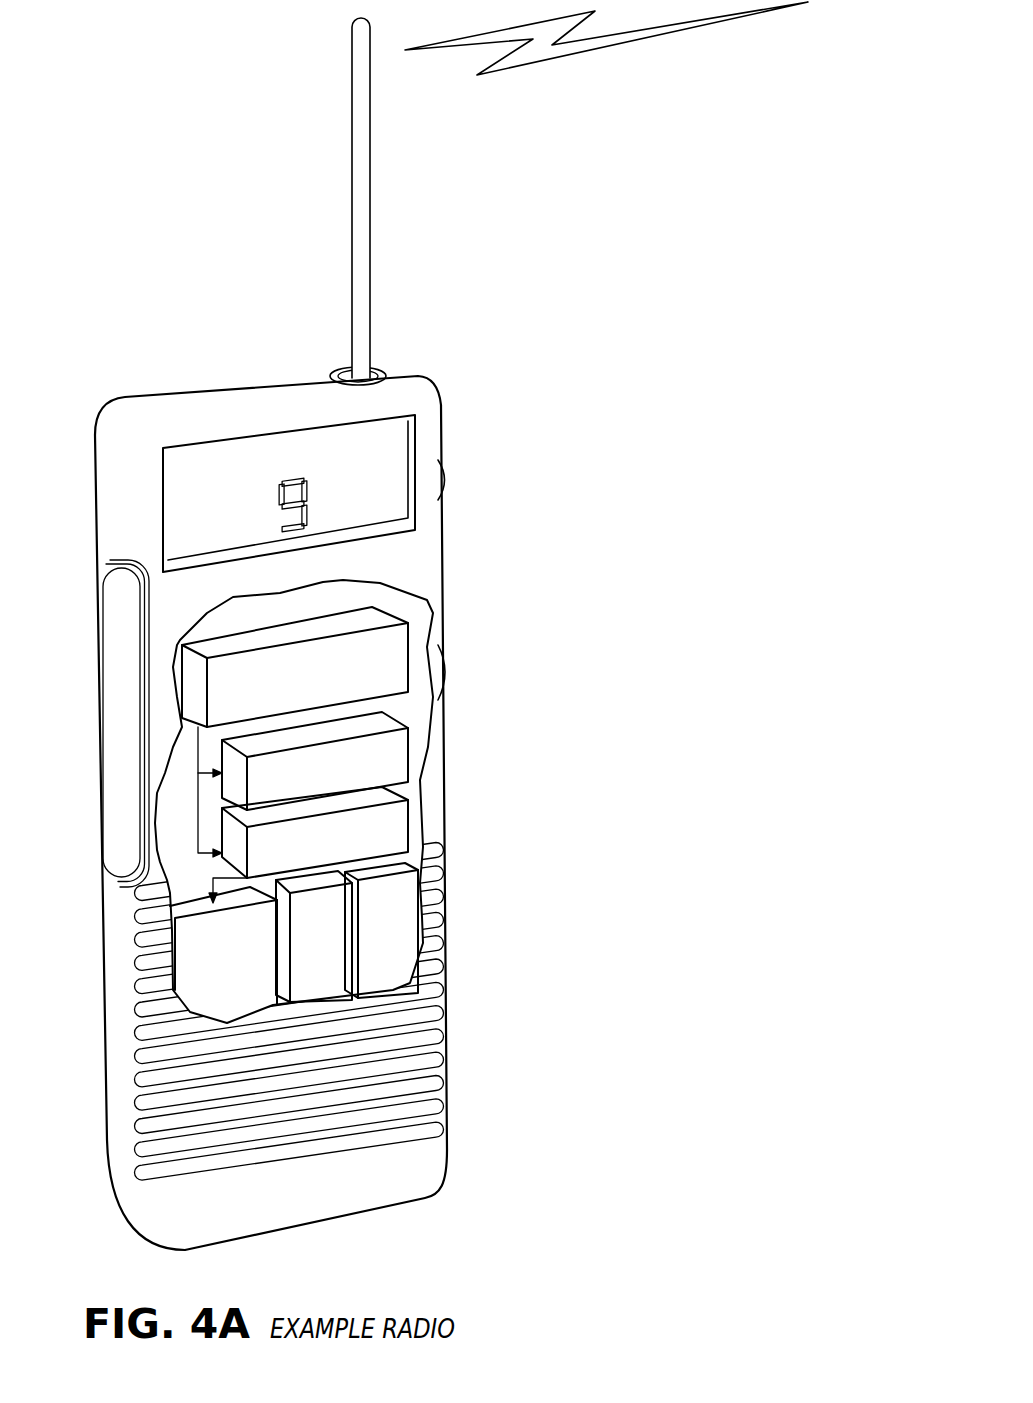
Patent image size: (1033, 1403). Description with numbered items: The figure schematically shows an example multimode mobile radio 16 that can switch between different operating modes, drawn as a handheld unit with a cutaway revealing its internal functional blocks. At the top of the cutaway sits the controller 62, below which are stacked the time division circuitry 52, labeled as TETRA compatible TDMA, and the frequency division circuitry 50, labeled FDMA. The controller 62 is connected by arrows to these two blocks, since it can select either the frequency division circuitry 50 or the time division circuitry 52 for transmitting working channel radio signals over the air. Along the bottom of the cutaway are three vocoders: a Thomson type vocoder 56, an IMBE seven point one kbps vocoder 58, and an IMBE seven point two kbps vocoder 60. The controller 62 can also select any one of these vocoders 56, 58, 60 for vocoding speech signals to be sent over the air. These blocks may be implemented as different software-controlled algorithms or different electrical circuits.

The radio 16 is at (492, 339).
The controller 62 is at (392, 653).
The time division circuitry 52 is at (400, 762).
The frequency division circuitry 50 is at (400, 830).
The Thomson type vocoder 56 is at (183, 987).
The IMBE 7.1 kbps vocoder 58 is at (328, 898).
The IMBE 7.2 kbps vocoder 60 is at (405, 978).